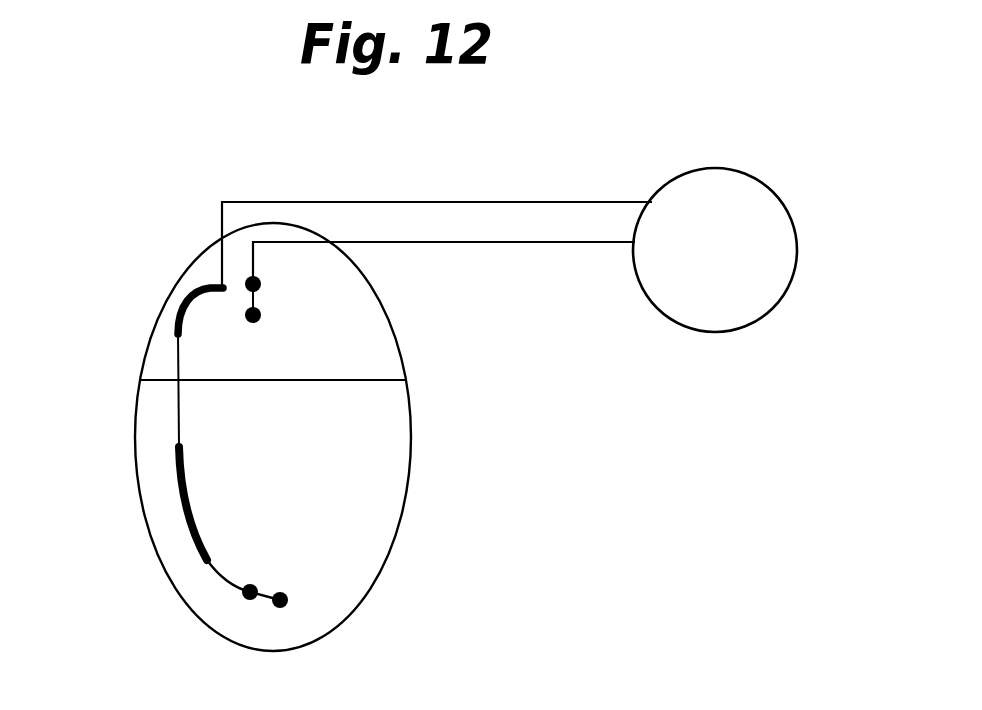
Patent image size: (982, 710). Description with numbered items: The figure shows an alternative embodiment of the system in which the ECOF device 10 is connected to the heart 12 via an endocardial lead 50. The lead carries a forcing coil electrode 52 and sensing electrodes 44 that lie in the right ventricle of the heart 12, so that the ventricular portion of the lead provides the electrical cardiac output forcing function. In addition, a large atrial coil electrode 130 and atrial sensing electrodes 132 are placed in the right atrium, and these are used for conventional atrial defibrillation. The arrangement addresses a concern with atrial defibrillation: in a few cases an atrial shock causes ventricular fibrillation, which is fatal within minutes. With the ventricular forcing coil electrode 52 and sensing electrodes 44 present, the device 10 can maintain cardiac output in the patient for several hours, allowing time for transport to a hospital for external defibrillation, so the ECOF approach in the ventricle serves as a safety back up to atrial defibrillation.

The device 10 is at (787, 208).
The heart 12 is at (410, 478).
The sensing electrodes 44 is at (267, 592).
The endocardial lead 50 is at (448, 200).
The forcing coil electrode 52 is at (190, 518).
The atrial coil electrode 130 is at (182, 310).
The atrial sensing electrodes 132 is at (261, 311).